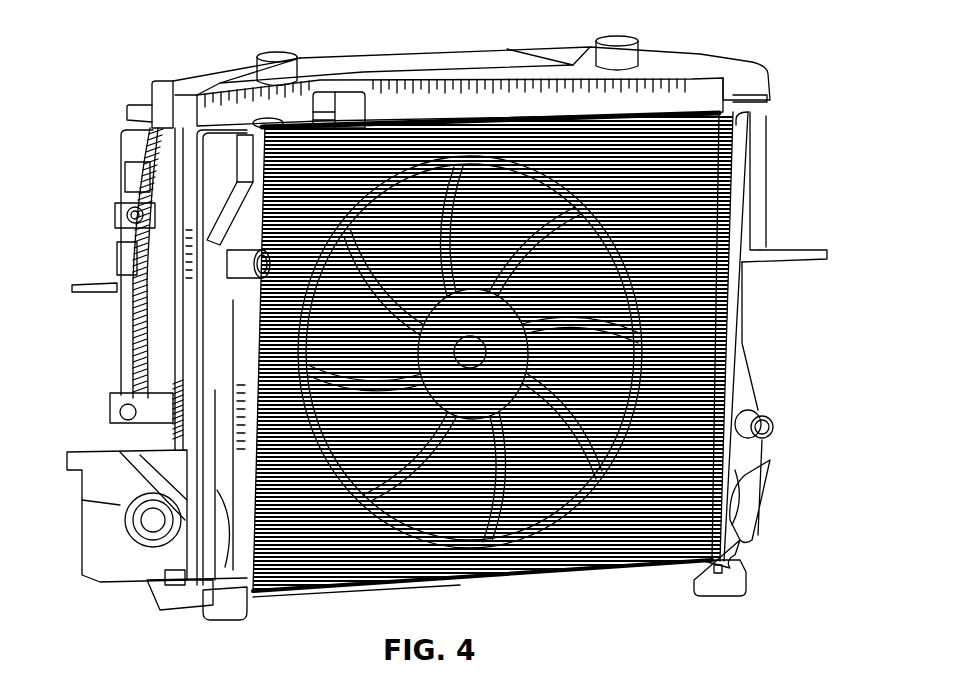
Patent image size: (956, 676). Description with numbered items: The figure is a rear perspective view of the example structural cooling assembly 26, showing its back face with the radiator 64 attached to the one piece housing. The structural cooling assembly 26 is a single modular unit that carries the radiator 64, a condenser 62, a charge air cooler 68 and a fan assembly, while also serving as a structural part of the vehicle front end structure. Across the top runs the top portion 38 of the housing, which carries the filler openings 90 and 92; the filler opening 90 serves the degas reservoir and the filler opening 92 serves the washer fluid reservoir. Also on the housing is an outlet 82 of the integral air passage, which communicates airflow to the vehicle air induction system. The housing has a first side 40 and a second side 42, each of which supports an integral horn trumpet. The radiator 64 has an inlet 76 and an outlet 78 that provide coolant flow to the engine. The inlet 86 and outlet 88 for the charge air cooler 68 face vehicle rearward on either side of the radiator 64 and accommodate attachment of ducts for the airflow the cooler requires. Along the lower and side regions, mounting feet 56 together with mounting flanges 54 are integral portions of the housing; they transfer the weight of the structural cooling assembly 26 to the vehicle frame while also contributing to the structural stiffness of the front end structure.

The structural cooling assembly 26 is at (192, 55).
The top portion 38 is at (500, 72).
The first side 40 is at (795, 305).
The second side 42 is at (100, 228).
The mounting flanges 54 is at (75, 290).
The mounting feet 56 is at (205, 618).
The condenser 62 is at (155, 345).
The radiator 64 is at (735, 368).
The charge air cooler 68 is at (170, 578).
The inlet 76 is at (235, 262).
The outlet 78 is at (780, 425).
The outlet 82 is at (340, 98).
The inlet 86 is at (105, 528).
The outlet 88 is at (760, 485).
The filler opening 90 is at (260, 58).
The filler opening 92 is at (634, 40).